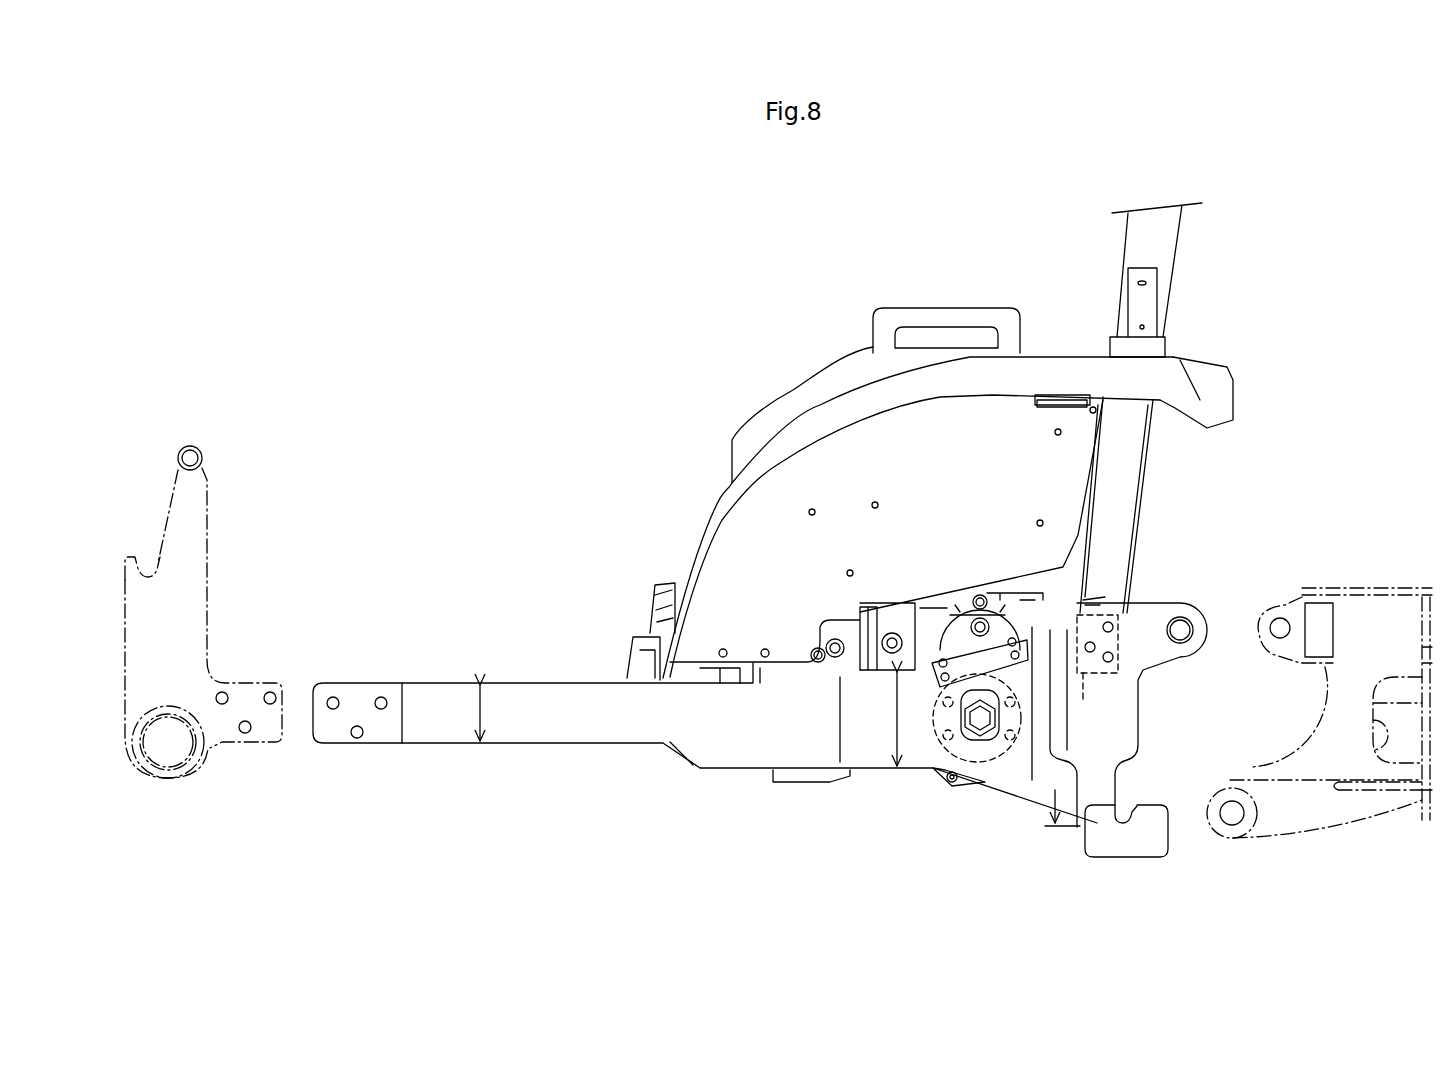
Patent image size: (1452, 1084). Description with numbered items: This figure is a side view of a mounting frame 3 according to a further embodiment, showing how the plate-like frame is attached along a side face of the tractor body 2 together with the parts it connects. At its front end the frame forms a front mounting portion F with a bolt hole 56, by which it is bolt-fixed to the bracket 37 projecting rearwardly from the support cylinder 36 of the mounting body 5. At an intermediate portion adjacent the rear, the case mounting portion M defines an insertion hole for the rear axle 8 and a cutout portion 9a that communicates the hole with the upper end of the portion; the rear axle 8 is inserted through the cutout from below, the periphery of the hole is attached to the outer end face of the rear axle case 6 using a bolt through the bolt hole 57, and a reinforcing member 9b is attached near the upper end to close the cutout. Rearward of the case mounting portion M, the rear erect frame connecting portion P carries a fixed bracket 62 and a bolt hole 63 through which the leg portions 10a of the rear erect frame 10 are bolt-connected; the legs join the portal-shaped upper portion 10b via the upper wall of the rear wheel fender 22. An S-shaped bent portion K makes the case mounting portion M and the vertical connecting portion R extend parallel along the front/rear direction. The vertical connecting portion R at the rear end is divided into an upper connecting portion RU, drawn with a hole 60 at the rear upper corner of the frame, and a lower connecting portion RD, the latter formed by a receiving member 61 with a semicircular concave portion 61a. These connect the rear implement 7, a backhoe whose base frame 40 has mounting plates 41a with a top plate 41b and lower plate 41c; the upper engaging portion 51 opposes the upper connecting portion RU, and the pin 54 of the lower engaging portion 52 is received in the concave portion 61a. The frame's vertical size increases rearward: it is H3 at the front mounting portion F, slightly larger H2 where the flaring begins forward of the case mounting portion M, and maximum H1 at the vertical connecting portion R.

The tractor body 2 is at (621, 620).
The mounting frame 3 is at (597, 749).
The mounting body 5 is at (213, 571).
The rear axle case 6 is at (930, 753).
The rear implement 7 is at (1349, 583).
The rear axle 8 is at (973, 723).
The cutout portion 9a is at (980, 600).
The reinforcing member 9b is at (940, 640).
The rear erect frame 10 is at (1172, 408).
The leg portion 10a is at (1127, 478).
The upper portion 10b is at (1152, 248).
The fender 22 is at (815, 417).
The support cylinder 36 is at (197, 762).
The bracket 37 is at (243, 690).
The base frame 40 is at (1319, 696).
The mounting plate 41a is at (1308, 840).
The top plate 41b is at (1380, 590).
The lower plate 41c is at (1352, 792).
The upper engaging portion 51 is at (1280, 620).
The lower engaging portion 52 is at (1232, 836).
The pin 54 is at (1232, 808).
The bolt hole 56 is at (381, 697).
The bolt hole 57 is at (994, 738).
The pin hole 60 is at (1193, 615).
The receiving member 61 is at (1150, 810).
The semicircular concave portion 61a is at (1130, 818).
The bracket 62 is at (1093, 671).
The bolt hole 63 is at (1110, 662).
The front mounting portion F is at (377, 747).
The vertical connecting portion R is at (1115, 859).
The upper connecting portion RU is at (1163, 610).
The lower connecting portion RD is at (1150, 827).
The rear erect frame connecting portion P is at (1096, 596).
The case mounting portion M is at (974, 790).
The bent portion K is at (1033, 792).
The vertical size H1 is at (1077, 813).
The vertical size H2 is at (897, 732).
The vertical size H3 is at (482, 713).